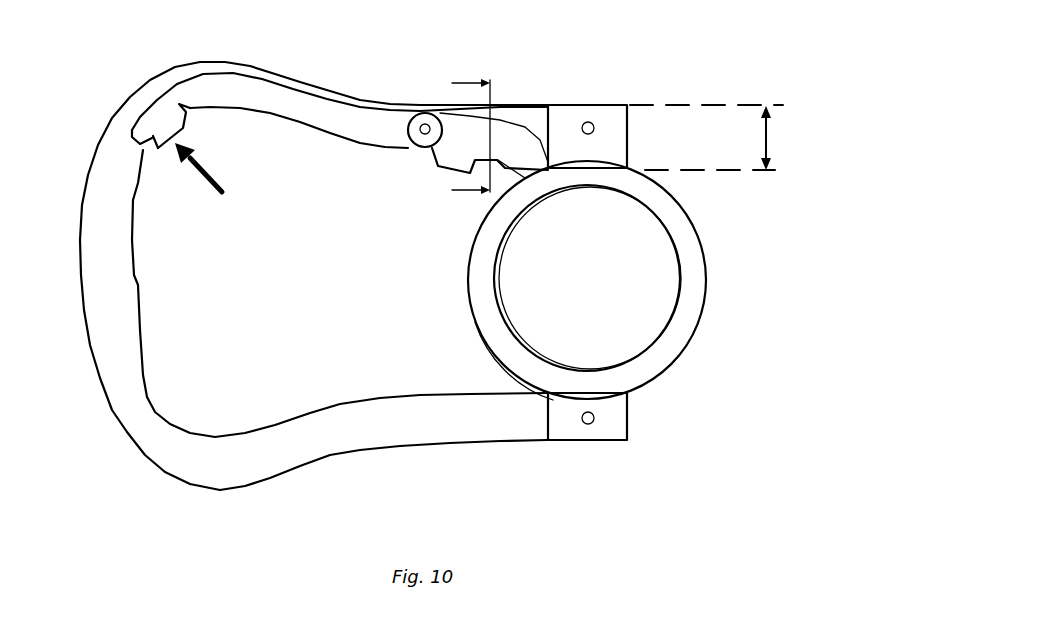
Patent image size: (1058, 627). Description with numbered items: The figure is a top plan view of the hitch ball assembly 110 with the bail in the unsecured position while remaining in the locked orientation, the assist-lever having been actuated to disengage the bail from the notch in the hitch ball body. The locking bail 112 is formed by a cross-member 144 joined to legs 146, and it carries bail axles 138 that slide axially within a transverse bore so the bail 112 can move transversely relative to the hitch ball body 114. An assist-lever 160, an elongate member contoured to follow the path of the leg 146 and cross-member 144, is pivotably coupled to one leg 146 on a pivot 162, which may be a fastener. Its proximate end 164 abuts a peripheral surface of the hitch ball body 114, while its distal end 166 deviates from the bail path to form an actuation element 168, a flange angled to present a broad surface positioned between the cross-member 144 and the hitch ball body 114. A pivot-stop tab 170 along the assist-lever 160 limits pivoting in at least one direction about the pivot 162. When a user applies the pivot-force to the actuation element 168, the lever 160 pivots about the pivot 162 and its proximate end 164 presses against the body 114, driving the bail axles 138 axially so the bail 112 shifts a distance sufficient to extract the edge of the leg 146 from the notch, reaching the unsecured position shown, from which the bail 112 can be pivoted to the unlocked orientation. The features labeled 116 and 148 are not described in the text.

The hitch ball assembly 110 is at (429, 286).
The locking bail 112 is at (178, 478).
The hitch ball body 114 is at (698, 313).
The ring inner opening 116 is at (655, 340).
The bail axles 138 is at (588, 442).
The cross-member 144 is at (82, 298).
The leg 146 is at (295, 80).
The frame inner wall 148 is at (143, 337).
The assist-lever 160 is at (317, 122).
The pivot 162 is at (410, 140).
The proximate end 164 is at (532, 173).
The distal end 166 is at (133, 137).
The actuation element 168 is at (183, 129).
The pivot-stop tab 170 is at (442, 172).